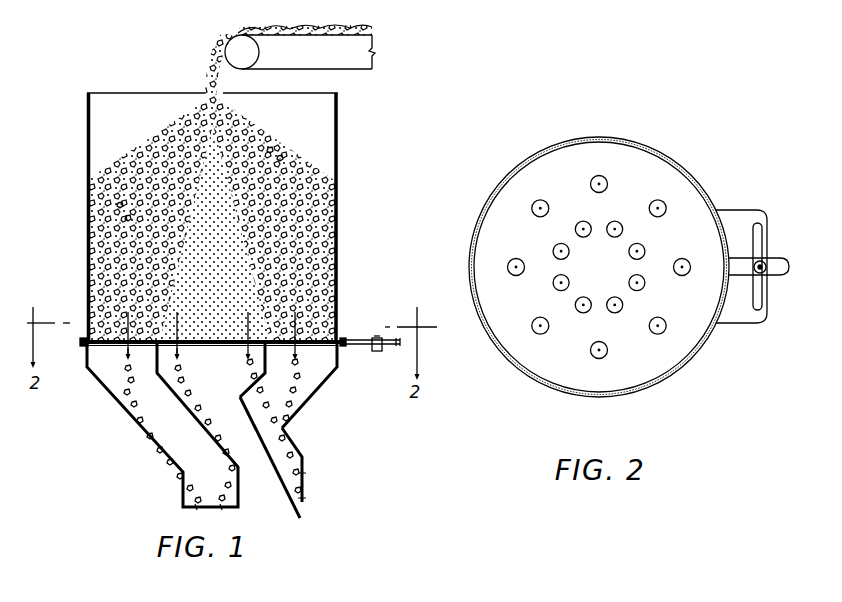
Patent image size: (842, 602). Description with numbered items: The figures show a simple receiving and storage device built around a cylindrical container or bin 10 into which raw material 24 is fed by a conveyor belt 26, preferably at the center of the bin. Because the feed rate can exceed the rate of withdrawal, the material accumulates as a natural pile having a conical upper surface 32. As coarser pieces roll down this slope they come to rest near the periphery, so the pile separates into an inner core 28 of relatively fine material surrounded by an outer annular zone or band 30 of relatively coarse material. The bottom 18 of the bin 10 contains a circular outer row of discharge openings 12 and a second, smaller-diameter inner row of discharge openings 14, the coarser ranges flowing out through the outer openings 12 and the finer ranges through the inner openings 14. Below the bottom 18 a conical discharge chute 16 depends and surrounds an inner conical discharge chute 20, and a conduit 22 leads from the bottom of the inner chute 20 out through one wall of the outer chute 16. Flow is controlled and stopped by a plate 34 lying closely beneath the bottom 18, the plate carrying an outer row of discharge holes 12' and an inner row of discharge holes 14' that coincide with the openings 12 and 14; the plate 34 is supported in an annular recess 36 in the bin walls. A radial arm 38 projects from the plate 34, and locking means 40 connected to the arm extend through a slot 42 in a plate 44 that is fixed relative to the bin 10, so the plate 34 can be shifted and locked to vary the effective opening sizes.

In FIG. 1, the cylindrical container or bin 10 is at (338, 207).
In FIG. 2, the cylindrical container or bin 10 is at (473, 237).
In FIG. 1, the outer row of discharge openings 12 is at (203, 310).
In FIG. 2, the outer row of discharge openings 12 is at (571, 271).
In FIG. 1, the outer row of discharge holes 12' is at (92, 400).
In FIG. 1, the inner row of discharge openings 14 is at (209, 295).
In FIG. 2, the inner row of discharge openings 14 is at (556, 277).
In FIG. 1, the inner row of discharge holes 14' is at (200, 371).
In FIG. 1, the conical discharge chute 16 is at (296, 415).
In FIG. 1, the bottom 18 is at (340, 325).
In FIG. 2, the bottom 18 is at (643, 183).
In FIG. 1, the inner conical discharge chute 20 is at (167, 383).
In FIG. 1, the conduit 22 is at (278, 493).
In FIG. 1, the raw material 24 is at (362, 28).
In FIG. 1, the conveyor belt 26 is at (345, 70).
In FIG. 1, the inner core 28 is at (203, 170).
In FIG. 1, the outer annular zone or band 30 is at (125, 213).
In FIG. 1, the conical upper surface 32 is at (273, 148).
In FIG. 1, the plate 34 is at (320, 346).
In FIG. 1, the annular recess 36 is at (81, 342).
In FIG. 1, the radial arm 38 is at (397, 338).
In FIG. 2, the radial arm 38 is at (783, 277).
In FIG. 1, the locking means 40 is at (378, 353).
In FIG. 2, the slot 42 is at (757, 226).
In FIG. 1, the plate 44 is at (350, 347).
In FIG. 2, the plate 44 is at (750, 324).